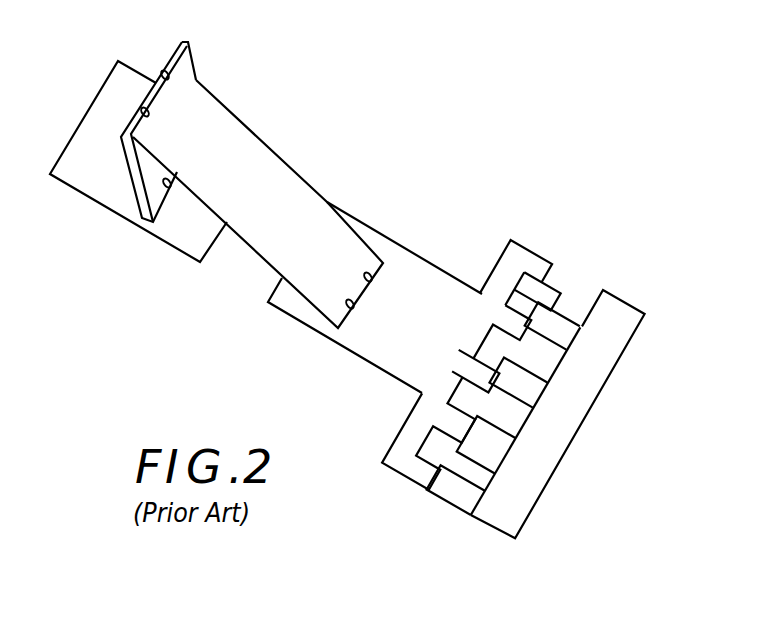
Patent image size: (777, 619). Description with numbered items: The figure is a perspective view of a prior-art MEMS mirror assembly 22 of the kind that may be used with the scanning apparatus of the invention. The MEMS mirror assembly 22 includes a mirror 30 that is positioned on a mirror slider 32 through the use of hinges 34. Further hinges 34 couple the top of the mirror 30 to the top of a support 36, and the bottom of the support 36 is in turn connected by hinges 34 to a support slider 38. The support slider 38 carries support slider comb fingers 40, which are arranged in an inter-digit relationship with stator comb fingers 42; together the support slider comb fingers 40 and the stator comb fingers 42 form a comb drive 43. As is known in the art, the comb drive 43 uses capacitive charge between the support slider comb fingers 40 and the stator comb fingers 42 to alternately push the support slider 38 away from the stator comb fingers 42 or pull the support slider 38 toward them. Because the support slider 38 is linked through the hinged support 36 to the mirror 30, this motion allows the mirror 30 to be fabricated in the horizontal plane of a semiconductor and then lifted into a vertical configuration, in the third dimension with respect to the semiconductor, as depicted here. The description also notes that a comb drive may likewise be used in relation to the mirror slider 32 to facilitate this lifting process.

The MEMS mirror assembly 22 is at (352, 47).
The mirror 30 is at (112, 143).
The mirror slider 32 is at (138, 131).
The hinges 34 is at (253, 222).
The support 36 is at (277, 236).
The support slider 38 is at (404, 248).
The support slider comb fingers 40 is at (501, 359).
The stator comb fingers 42 is at (487, 422).
The comb drive 43 is at (542, 378).